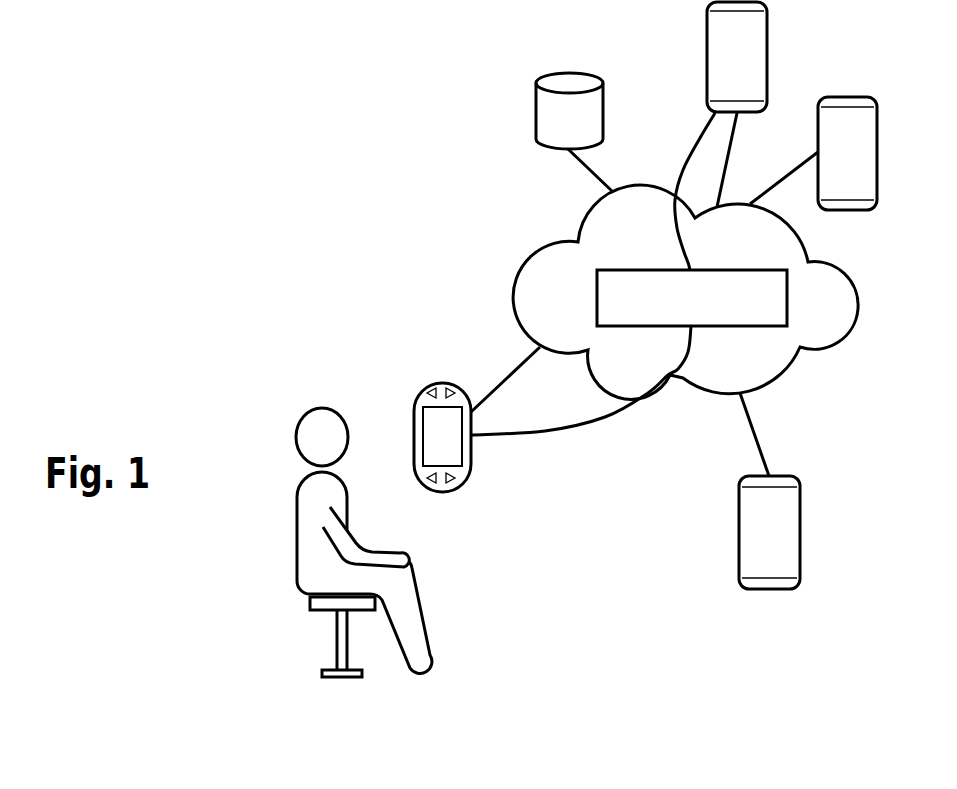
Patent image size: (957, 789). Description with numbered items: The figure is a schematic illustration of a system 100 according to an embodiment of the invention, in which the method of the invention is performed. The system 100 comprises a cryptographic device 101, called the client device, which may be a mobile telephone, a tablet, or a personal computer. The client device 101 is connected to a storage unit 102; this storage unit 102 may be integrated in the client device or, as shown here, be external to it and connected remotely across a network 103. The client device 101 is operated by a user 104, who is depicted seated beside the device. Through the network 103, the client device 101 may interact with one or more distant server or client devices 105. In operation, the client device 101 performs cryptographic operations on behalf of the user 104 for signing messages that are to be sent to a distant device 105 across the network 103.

The system 100 is at (360, 232).
The cryptographic device 101 is at (443, 385).
The storage unit 102 is at (540, 118).
The network 103 is at (555, 258).
The user 104 is at (323, 418).
The distant server or client devices 105 is at (767, 55).